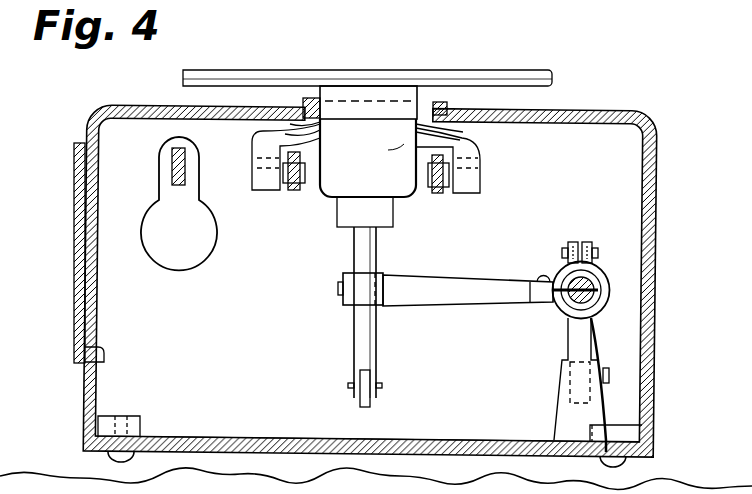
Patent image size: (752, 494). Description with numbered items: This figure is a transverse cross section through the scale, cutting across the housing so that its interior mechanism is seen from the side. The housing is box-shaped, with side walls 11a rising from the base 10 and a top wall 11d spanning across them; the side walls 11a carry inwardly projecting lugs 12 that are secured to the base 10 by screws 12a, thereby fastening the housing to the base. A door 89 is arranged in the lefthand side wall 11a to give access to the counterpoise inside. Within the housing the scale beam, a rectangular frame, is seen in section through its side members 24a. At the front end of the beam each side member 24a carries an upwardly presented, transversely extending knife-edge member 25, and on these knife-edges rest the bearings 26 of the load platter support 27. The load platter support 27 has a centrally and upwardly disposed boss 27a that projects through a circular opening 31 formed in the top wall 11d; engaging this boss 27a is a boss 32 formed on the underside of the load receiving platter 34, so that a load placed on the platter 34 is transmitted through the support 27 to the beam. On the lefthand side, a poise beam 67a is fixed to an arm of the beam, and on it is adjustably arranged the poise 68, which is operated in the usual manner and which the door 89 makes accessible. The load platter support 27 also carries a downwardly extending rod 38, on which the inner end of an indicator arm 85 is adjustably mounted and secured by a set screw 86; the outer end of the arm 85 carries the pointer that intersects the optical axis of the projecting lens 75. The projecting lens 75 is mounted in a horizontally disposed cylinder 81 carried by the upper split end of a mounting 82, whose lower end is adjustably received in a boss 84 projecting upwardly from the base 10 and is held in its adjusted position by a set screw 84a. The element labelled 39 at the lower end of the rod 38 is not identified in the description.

The base 10 is at (277, 438).
The side walls 11a is at (658, 181).
The top wall 11d is at (582, 110).
The lugs 12 is at (138, 419).
The screws 12a is at (112, 458).
The side members 24a is at (296, 194).
The knife-edge member 25 is at (272, 192).
The bearings 26 is at (262, 160).
The load platter support 27 is at (402, 201).
The boss 27a is at (372, 154).
The circular opening 31 is at (312, 102).
The boss 32 is at (362, 95).
The load receiving platter 34 is at (480, 81).
The rod 38 is at (356, 345).
The pin 39 is at (382, 390).
The poise beam 67a is at (172, 165).
The poise 68 is at (179, 203).
The lens 75 is at (572, 311).
The cylinder 81 is at (608, 257).
The mounting 82 is at (570, 266).
The boss 84 is at (572, 410).
The set screw 84a is at (610, 372).
The indicator arm 85 is at (470, 303).
The set screw 86 is at (340, 287).
The door 89 is at (74, 284).